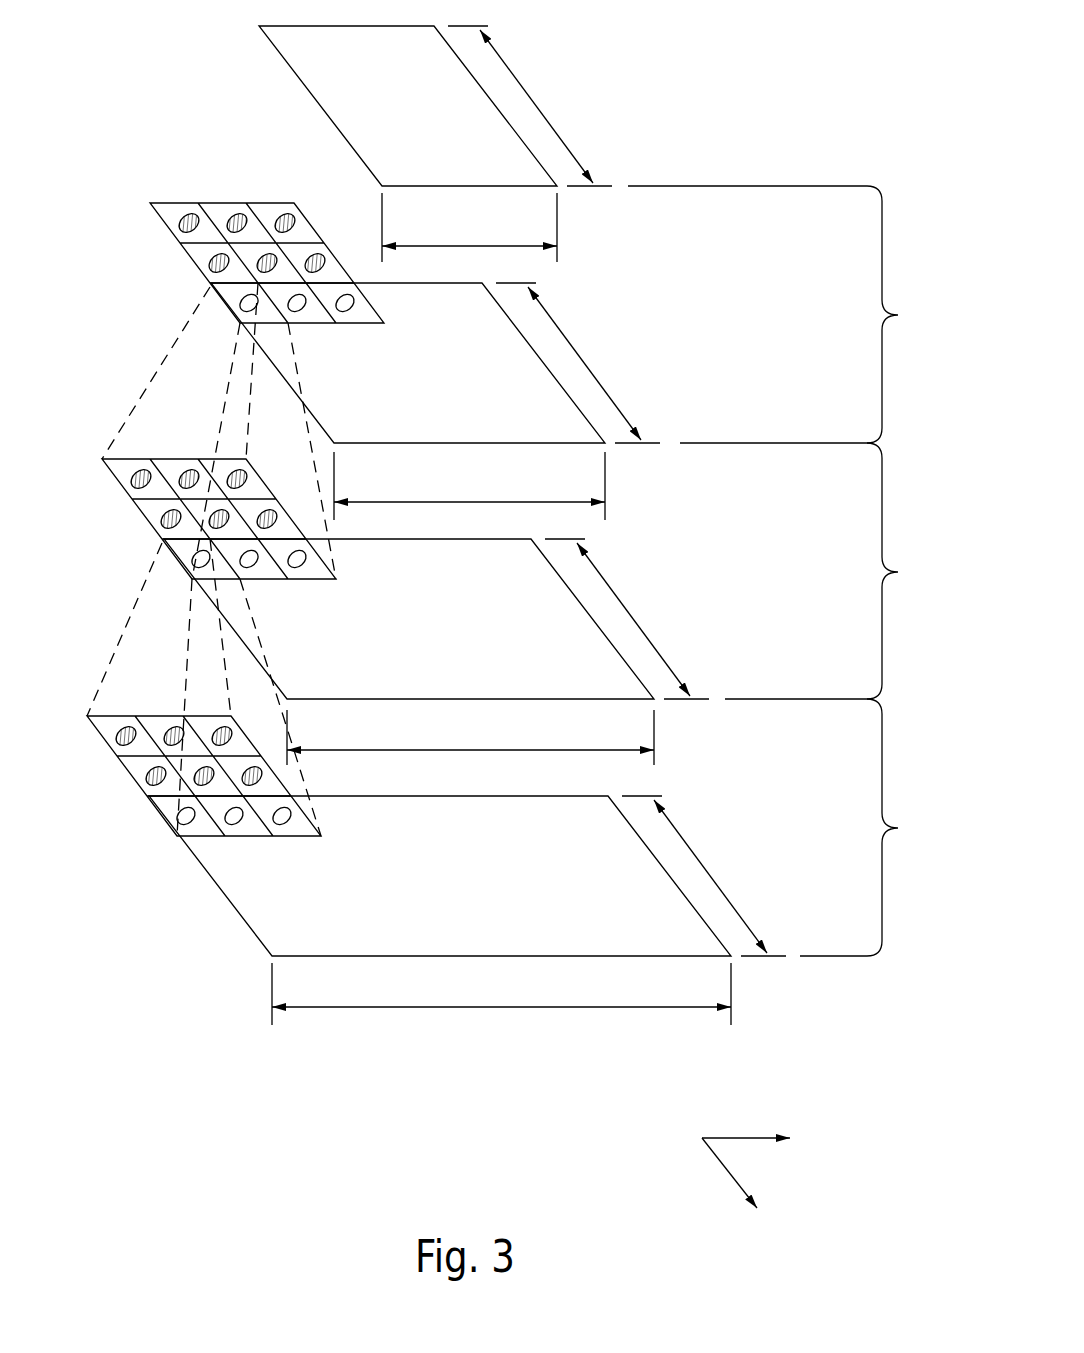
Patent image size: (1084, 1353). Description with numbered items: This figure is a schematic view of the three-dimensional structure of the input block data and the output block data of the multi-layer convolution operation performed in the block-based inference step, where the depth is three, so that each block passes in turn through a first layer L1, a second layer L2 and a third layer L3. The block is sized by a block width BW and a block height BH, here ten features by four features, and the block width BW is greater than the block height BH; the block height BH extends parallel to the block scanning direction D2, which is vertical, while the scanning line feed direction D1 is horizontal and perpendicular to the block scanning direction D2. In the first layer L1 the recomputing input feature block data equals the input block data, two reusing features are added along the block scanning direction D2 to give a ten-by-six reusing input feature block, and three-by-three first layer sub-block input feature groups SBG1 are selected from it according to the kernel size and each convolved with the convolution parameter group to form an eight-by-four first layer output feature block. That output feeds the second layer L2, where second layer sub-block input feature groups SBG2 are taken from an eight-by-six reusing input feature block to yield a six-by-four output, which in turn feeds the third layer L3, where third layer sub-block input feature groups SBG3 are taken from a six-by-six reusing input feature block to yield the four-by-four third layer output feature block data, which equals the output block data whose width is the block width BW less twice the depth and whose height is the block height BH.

The first layer sub-block input feature groups SBG1 is at (139, 785).
The second layer sub-block input feature groups SBG2 is at (118, 481).
The third layer sub-block input feature groups SBG3 is at (165, 225).
The first layer L1 is at (873, 827).
The second layer L2 is at (835, 571).
The third layer L3 is at (787, 314).
The block height BH is at (617, 491).
The block width BW is at (501, 609).
The scanning line feed direction D1 is at (776, 1136).
The block scanning direction D2 is at (742, 1197).